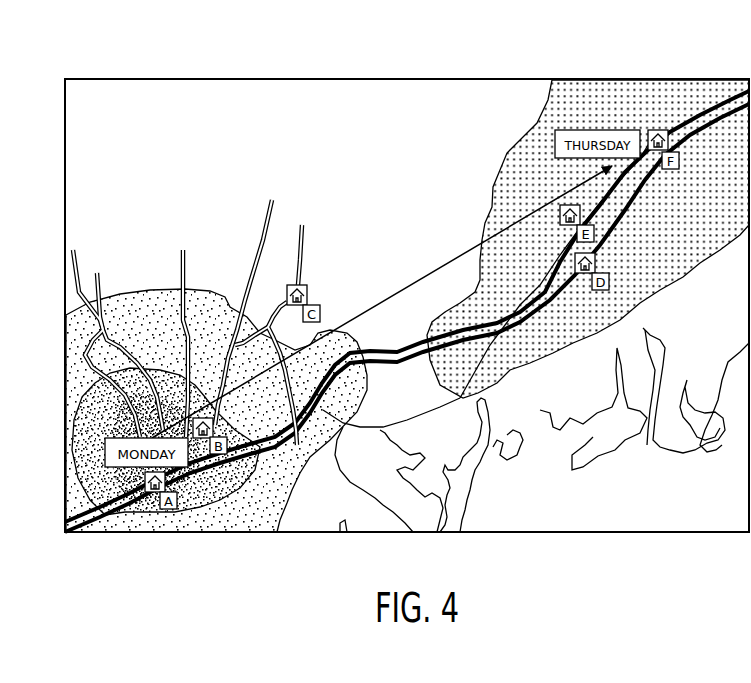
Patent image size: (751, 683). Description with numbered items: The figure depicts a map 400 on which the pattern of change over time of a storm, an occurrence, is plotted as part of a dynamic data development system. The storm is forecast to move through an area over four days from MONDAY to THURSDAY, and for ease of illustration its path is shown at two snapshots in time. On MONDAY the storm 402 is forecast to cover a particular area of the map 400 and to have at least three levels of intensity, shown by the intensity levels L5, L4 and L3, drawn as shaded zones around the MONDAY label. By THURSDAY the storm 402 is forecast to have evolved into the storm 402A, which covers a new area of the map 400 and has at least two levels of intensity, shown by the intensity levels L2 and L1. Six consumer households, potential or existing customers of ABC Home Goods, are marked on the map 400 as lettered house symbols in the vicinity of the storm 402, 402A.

The map 400 is at (242, 55).
The storm 402 is at (213, 300).
The evolved storm 402A is at (497, 172).
The intensity level L1 is at (708, 90).
The intensity level L2 is at (656, 122).
The intensity level L3 is at (257, 527).
The intensity level L4 is at (185, 527).
The intensity level L5 is at (126, 533).